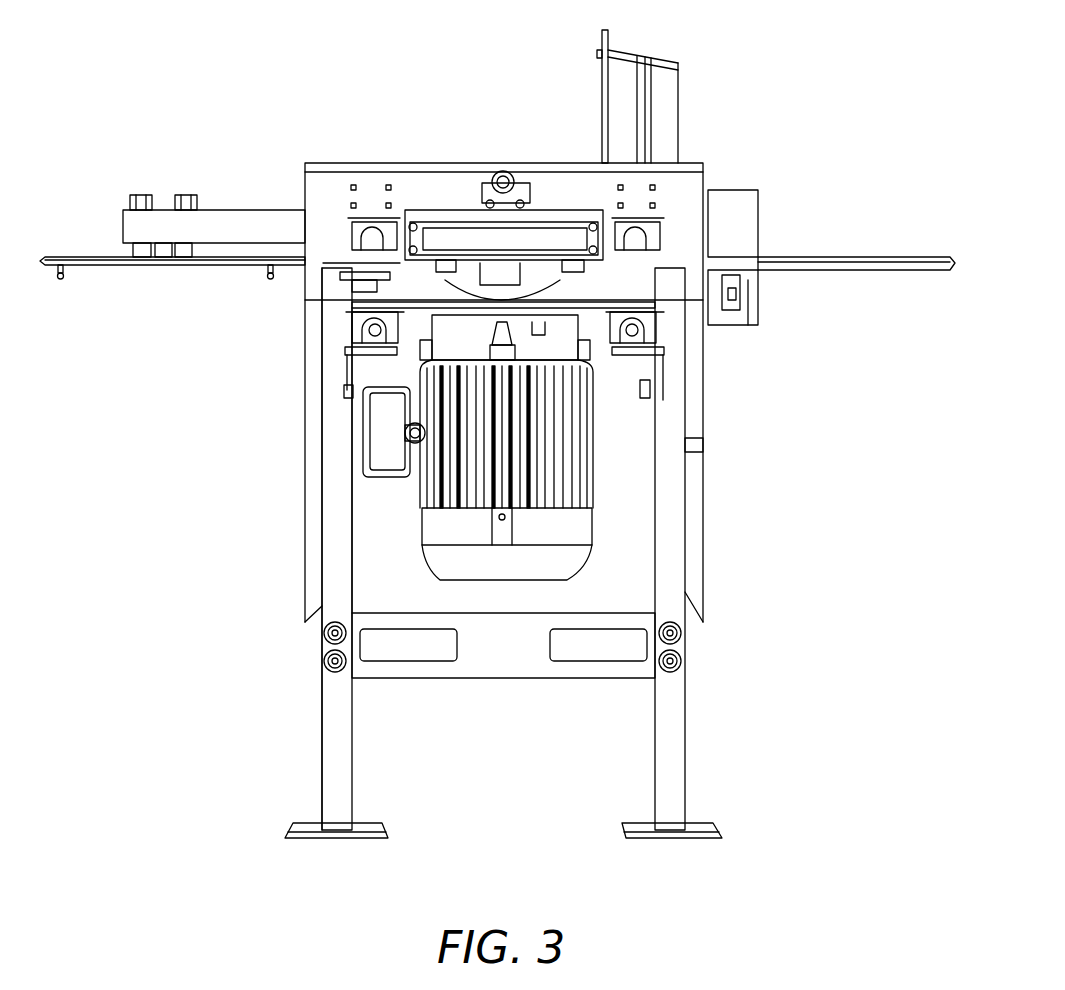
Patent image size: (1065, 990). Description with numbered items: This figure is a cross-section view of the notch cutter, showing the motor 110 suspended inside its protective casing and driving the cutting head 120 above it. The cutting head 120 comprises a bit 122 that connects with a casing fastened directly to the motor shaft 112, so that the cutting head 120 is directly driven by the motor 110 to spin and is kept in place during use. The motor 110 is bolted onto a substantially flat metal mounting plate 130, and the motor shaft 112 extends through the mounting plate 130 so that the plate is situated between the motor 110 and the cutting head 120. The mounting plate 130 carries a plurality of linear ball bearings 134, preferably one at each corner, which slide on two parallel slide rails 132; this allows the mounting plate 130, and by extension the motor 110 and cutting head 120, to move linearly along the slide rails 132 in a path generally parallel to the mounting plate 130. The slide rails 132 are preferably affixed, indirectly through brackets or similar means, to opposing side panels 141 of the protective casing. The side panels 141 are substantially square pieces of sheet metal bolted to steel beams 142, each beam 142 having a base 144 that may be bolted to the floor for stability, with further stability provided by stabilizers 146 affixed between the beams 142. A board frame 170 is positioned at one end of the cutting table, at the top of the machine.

The motor 110 is at (500, 435).
The motor shaft 112 is at (497, 275).
The cutting head 120 is at (545, 245).
The bit 122 is at (665, 280).
The mounting plate 130 is at (408, 280).
The slide rails 132 is at (358, 333).
The linear ball bearings 134 is at (352, 318).
The side panels 141 is at (305, 483).
The beams 142 is at (337, 548).
The base 144 is at (305, 828).
The stabilizers 146 is at (515, 640).
The board frame 170 is at (497, 429).